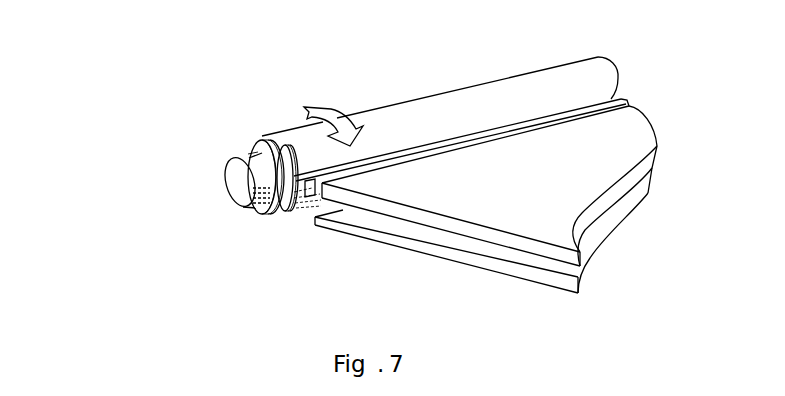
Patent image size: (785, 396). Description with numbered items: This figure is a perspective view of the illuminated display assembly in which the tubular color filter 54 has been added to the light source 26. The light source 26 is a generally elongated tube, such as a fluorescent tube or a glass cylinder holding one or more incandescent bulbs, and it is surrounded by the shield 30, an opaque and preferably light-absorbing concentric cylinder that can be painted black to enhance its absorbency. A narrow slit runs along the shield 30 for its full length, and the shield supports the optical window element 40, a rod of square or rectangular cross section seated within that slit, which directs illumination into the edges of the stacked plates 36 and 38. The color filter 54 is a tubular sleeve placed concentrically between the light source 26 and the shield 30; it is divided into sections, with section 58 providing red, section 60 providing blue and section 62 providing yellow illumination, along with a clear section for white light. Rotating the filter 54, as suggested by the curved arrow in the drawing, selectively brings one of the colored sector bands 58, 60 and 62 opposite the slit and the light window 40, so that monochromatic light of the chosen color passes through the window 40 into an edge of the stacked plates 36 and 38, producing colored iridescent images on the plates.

The light source 26 is at (238, 176).
The shield 30 is at (402, 118).
The stacked plate 36 is at (657, 148).
The stacked plate 38 is at (632, 206).
The optical window element 40 is at (315, 192).
The color filter 54 is at (246, 152).
The section 58 is at (262, 150).
The section 60 is at (283, 157).
The section 62 is at (283, 196).